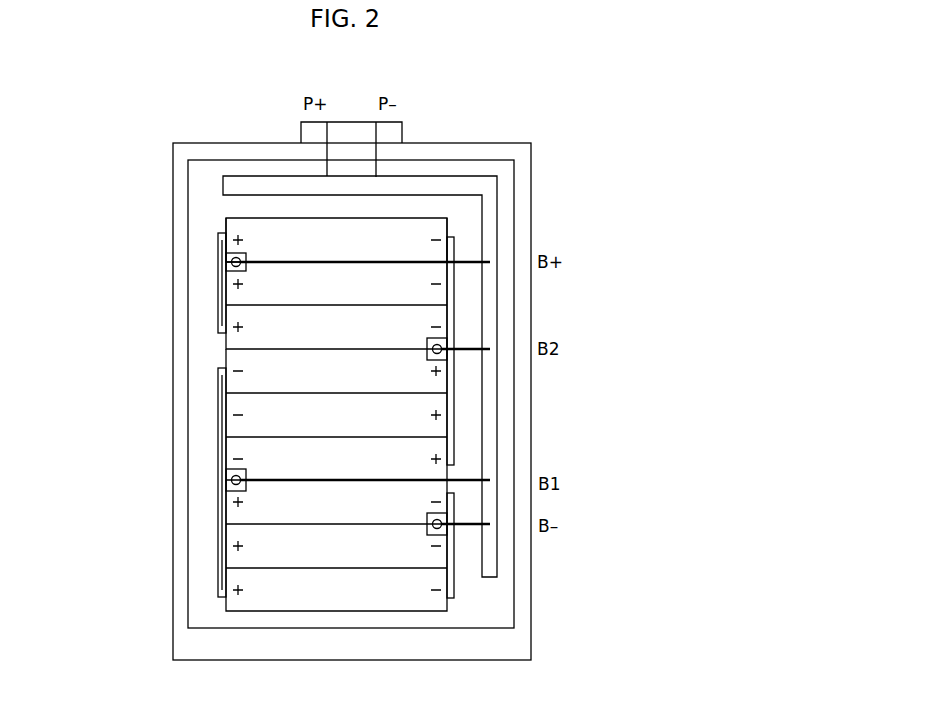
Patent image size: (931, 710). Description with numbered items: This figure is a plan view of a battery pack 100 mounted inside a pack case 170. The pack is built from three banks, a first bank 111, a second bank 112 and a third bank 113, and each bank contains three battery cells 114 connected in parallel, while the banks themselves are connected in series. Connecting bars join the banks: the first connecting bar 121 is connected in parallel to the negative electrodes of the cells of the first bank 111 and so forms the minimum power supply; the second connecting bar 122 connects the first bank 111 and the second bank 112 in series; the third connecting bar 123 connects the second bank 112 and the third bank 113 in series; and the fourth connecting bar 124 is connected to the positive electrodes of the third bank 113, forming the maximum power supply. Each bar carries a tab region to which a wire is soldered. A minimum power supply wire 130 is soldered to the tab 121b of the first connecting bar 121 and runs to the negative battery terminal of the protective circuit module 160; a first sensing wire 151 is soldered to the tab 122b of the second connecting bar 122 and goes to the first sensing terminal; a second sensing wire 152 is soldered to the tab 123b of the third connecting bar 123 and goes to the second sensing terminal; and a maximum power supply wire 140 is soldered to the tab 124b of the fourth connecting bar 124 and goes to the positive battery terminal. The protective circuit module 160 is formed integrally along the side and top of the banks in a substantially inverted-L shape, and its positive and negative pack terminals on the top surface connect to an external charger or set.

The battery pack 100 is at (524, 122).
The first bank 111 is at (162, 545).
The second bank 112 is at (162, 398).
The third bank 113 is at (162, 275).
The battery cell 114 is at (250, 222).
The first connecting bar 121 is at (455, 582).
The region (tab) of first connecting bar 121b is at (440, 536).
The second connecting bar 122 is at (218, 585).
The region (tab) of second connecting bar 122b is at (234, 470).
The third connecting bar 123 is at (455, 410).
The region (tab) of third connecting bar 123b is at (440, 338).
The fourth connecting bar 124 is at (218, 240).
The region (tab) of fourth connecting bar 124b is at (236, 288).
The minimum power supply wire 130 is at (470, 523).
The maximum power supply wire 140 is at (470, 262).
The first sensing wire 151 is at (472, 481).
The second sensing wire 152 is at (465, 350).
The protective circuit module 160 is at (497, 188).
The pack case 170 is at (531, 625).